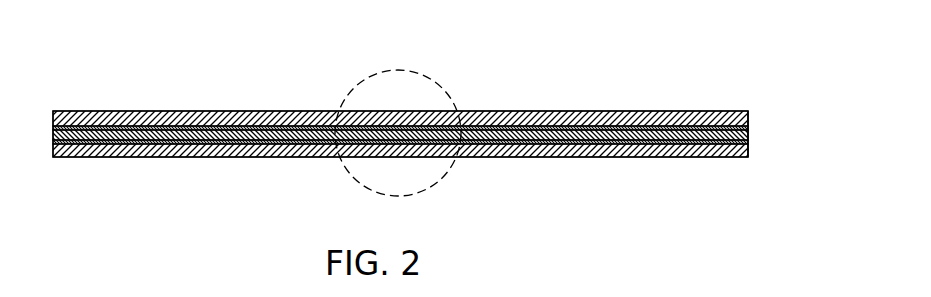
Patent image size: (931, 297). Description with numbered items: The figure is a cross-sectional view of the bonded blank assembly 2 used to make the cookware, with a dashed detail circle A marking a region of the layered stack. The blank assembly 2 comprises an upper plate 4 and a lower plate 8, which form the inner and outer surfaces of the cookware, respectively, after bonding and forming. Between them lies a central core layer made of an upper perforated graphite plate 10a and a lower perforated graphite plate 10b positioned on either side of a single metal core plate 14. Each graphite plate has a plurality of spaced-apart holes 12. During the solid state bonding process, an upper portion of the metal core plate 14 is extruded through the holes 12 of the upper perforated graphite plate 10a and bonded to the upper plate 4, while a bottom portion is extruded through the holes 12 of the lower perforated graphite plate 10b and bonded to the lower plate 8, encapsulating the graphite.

The blank assembly 2 is at (761, 68).
The spaced-apart holes 12 is at (513, 118).
The upper perforated graphite plate 10a is at (553, 127).
The upper plate 4 is at (625, 134).
The lower perforated graphite plate 10b is at (557, 143).
The lower plate 8 is at (632, 156).
The metal core plate 14 is at (748, 133).
The detail region A is at (420, 71).